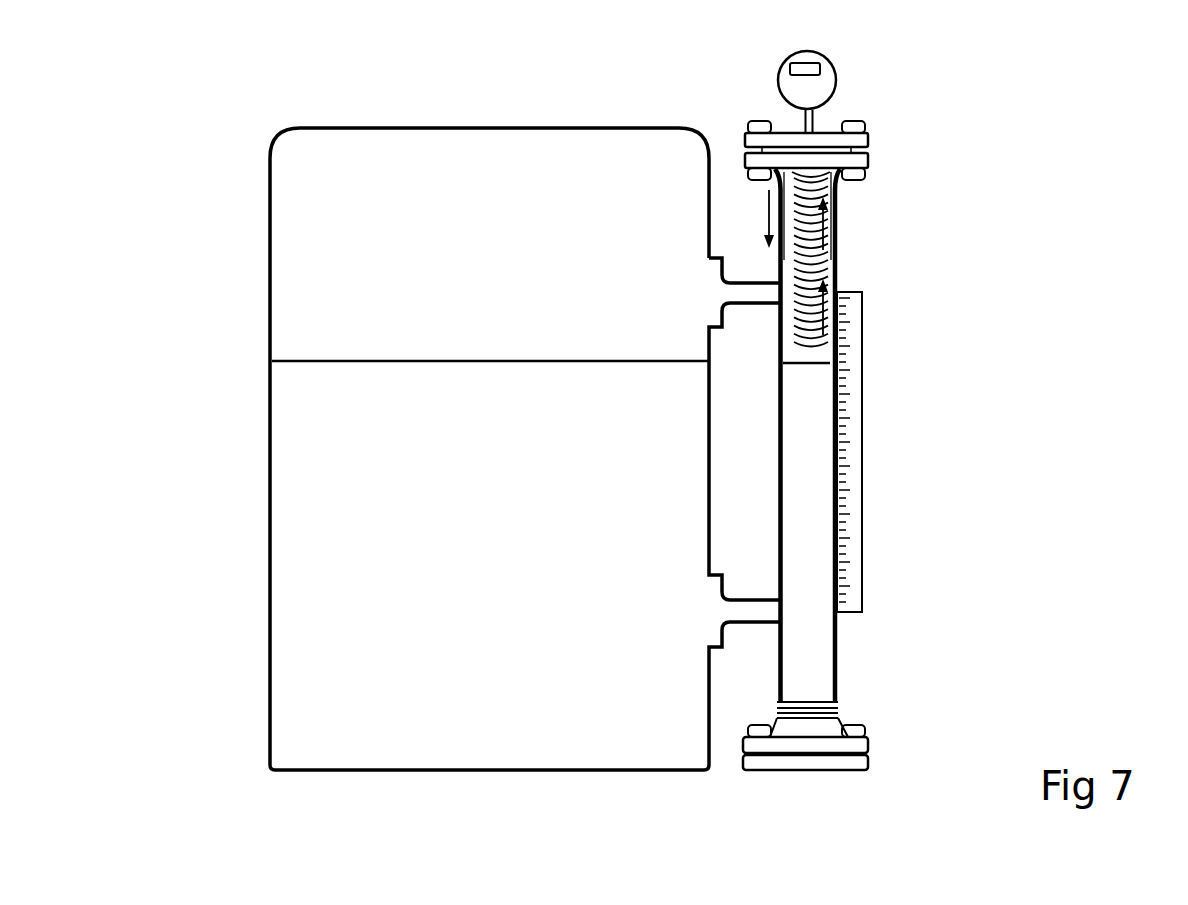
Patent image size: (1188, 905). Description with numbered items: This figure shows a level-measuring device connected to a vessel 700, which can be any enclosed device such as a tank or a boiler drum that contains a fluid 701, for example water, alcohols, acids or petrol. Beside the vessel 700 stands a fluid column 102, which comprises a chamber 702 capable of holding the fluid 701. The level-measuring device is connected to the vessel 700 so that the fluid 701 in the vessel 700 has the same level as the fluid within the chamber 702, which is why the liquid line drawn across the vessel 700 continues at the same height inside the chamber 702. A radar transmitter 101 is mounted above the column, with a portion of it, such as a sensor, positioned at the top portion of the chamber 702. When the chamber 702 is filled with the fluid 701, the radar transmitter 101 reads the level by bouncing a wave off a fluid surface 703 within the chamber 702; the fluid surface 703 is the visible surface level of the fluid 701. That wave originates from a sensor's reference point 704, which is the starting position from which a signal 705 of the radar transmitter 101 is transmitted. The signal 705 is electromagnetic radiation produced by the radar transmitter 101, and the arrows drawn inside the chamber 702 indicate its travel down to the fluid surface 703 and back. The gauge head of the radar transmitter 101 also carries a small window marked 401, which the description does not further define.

The vessel 700 is at (350, 160).
The fluid 701 is at (802, 660).
The chamber 702 is at (818, 349).
The fluid surface 703 is at (805, 367).
The sensor's reference point 704 is at (808, 167).
The signal 705 is at (807, 267).
The radar transmitter 101 is at (813, 88).
The fluid column 102 is at (833, 212).
The display window 401 is at (800, 73).